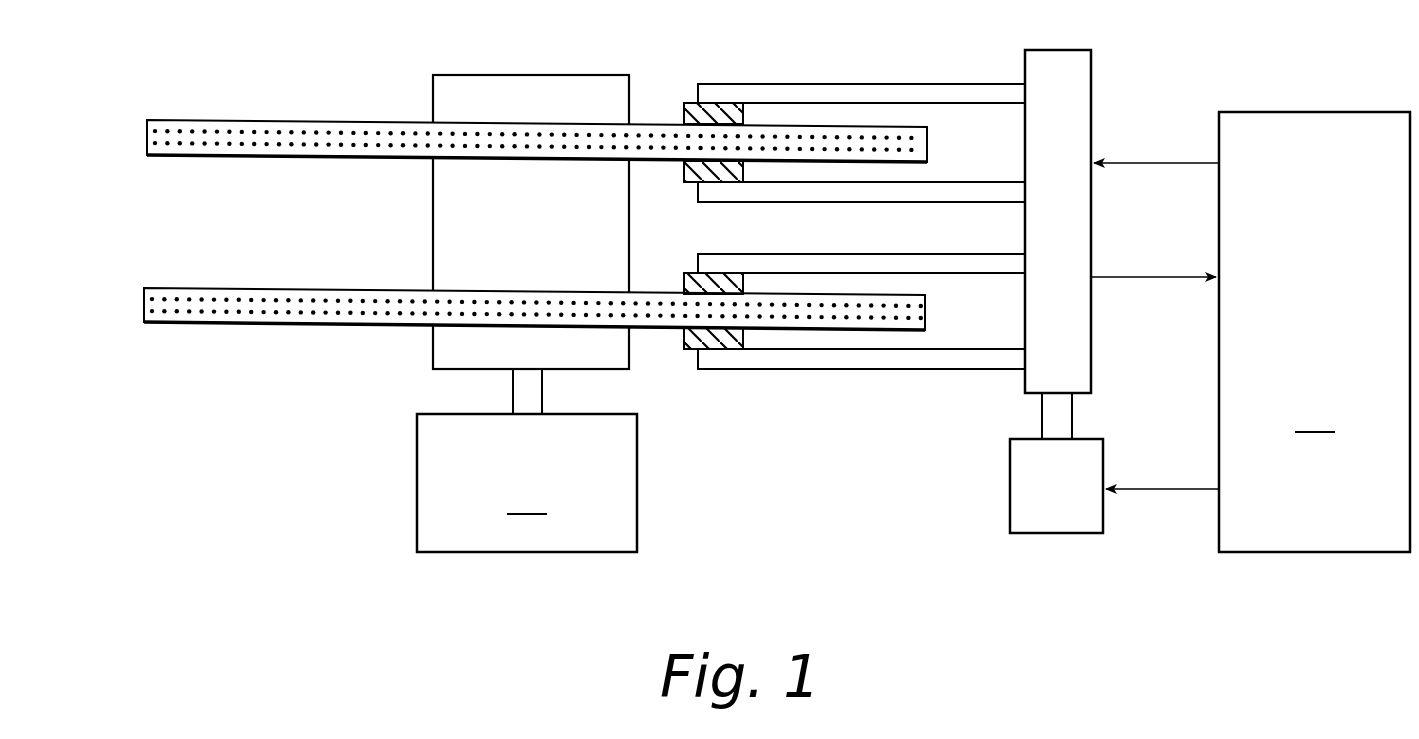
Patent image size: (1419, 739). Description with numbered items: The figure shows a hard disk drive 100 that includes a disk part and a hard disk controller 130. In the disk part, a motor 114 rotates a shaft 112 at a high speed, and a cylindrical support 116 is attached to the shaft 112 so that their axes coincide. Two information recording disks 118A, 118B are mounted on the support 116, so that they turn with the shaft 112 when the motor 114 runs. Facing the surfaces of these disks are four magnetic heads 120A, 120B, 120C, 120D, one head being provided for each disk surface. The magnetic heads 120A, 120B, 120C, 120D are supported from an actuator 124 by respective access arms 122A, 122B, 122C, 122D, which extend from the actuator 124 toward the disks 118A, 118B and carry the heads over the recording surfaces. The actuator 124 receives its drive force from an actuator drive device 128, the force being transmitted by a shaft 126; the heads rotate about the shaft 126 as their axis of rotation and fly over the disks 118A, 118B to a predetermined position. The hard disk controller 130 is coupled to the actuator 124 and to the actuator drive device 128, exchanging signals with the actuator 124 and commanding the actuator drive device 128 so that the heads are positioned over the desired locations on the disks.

The hard disk drive 100 is at (310, 78).
The shaft 112 is at (513, 384).
The motor 114 is at (527, 483).
The cylindrical support 116 is at (487, 75).
The information recording disk 118A is at (180, 120).
The information recording disk 118B is at (178, 323).
The magnetic head 120A is at (687, 103).
The magnetic head 120B is at (692, 180).
The magnetic head 120C is at (693, 275).
The magnetic head 120D is at (690, 348).
The access arm 122A is at (821, 84).
The access arm 122B is at (871, 203).
The access arm 122C is at (843, 254).
The access arm 122D is at (838, 369).
The actuator 124 is at (1096, 66).
The shaft 126 is at (1042, 430).
The actuator drive device 128 is at (1010, 495).
The hard disk controller 130 is at (1314, 332).